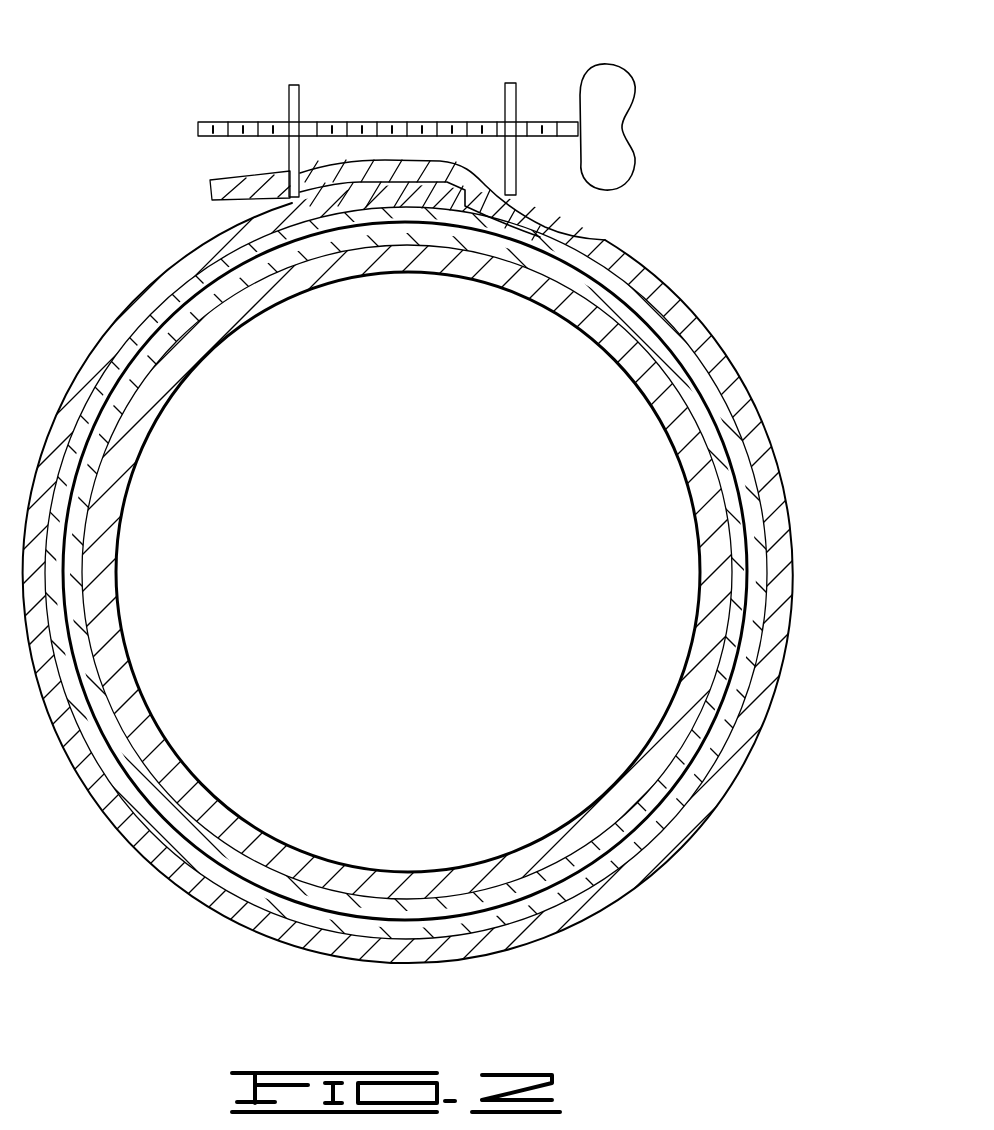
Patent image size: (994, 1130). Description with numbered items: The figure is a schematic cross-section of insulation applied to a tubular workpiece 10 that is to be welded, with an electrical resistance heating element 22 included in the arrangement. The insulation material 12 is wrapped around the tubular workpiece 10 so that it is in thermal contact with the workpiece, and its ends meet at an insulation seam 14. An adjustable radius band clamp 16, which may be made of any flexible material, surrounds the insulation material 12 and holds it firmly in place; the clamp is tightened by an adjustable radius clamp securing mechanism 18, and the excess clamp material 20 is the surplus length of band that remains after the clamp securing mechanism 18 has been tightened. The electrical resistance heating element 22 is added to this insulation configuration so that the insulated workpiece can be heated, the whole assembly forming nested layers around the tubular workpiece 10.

The hose 10 is at (600, 313).
The clamp band 12 is at (210, 870).
The screw housing 14 is at (405, 215).
The inner band layer 16 is at (618, 893).
The wing nut 18 is at (650, 93).
The band free end tab 20 is at (210, 180).
The liner 22 is at (650, 330).